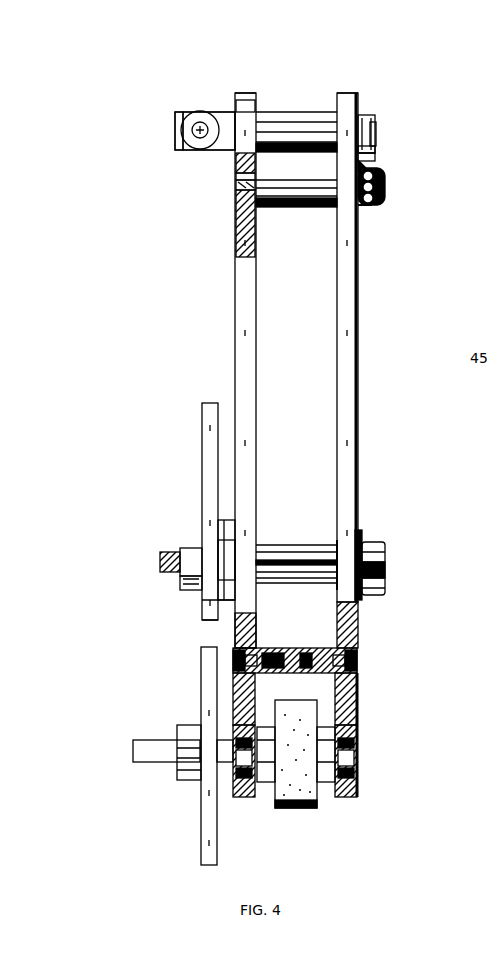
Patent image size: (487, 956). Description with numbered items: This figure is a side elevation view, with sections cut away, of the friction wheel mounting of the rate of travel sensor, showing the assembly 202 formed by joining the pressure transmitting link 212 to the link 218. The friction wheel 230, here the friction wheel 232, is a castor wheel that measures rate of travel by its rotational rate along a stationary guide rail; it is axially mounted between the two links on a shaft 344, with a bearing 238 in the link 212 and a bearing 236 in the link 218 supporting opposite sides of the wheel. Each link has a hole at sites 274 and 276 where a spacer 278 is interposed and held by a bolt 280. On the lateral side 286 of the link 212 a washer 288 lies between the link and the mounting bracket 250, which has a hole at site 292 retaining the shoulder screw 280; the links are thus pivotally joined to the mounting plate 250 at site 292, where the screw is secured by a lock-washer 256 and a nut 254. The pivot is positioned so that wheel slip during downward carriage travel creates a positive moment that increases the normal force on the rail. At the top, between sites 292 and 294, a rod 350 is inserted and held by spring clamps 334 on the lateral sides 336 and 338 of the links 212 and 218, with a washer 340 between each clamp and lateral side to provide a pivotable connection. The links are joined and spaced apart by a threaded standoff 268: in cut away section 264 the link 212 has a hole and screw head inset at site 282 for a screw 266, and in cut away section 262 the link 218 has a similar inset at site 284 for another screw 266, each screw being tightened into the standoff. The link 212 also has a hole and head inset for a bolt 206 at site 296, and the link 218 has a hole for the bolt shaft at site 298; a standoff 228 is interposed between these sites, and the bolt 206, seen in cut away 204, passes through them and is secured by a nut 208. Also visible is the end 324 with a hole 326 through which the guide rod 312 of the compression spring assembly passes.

The assembly 202 is at (369, 425).
The cut away 204 is at (244, 255).
The bolt 206 is at (243, 165).
The nut 208 is at (372, 206).
The pressure transmitting link 212 is at (204, 815).
The pressure transmitting link 218 is at (352, 797).
The standoff 228 is at (324, 150).
The friction wheel 230 is at (306, 810).
The friction wheel 232 is at (278, 808).
The bearing 236 is at (357, 735).
The bearing 238 is at (277, 700).
The mounting bracket 250 is at (203, 440).
The nut 254 is at (180, 584).
The lock-washer 256 is at (182, 552).
The cut away section 262 is at (358, 698).
The cut away section 264 is at (233, 685).
The screw 266 is at (245, 660).
The threaded standoff 268 is at (356, 648).
The site 274 is at (268, 542).
The site 276 is at (348, 540).
The spacer 278 is at (358, 600).
The shoulder screw 280 is at (385, 556).
The site 282 is at (235, 628).
The site 284 is at (358, 640).
The lateral side 286 is at (226, 606).
The washer 288 is at (226, 520).
The site 292 is at (246, 100).
The site 294 is at (365, 115).
The site 296 is at (244, 190).
The site 298 is at (370, 165).
The guide rod 312 is at (190, 112).
The end 324 is at (178, 128).
The hole 326 is at (196, 148).
The spring clamp 334 is at (237, 102).
The lateral side 336 is at (236, 328).
The lateral side 338 is at (360, 324).
The washer 340 is at (240, 180).
The shaft 344 is at (133, 752).
The rod 350 is at (378, 130).